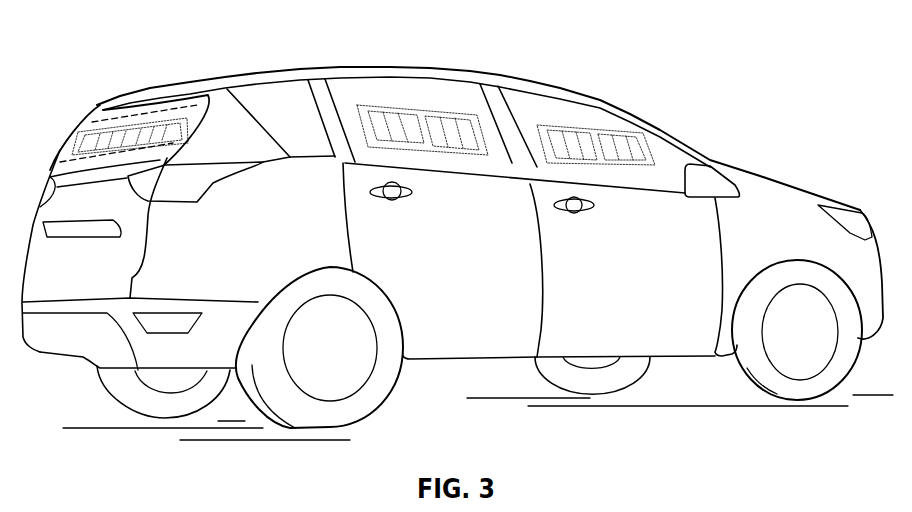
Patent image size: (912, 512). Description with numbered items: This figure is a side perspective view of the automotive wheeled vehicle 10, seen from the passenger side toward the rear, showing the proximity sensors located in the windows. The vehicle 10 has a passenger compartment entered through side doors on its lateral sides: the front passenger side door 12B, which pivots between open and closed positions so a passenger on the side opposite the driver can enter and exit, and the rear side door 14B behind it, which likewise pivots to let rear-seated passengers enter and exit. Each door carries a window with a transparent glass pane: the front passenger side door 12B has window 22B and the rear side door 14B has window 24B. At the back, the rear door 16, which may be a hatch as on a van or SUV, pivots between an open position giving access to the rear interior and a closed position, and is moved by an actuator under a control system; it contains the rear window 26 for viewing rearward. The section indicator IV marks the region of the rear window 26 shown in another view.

The automotive wheeled vehicle 10 is at (745, 98).
The front passenger side door 12B is at (648, 290).
The rear side door 14B is at (462, 290).
The rear door 16 is at (68, 282).
The window 22B is at (551, 108).
The window 24B is at (373, 97).
The rear window 26 is at (149, 112).
The section view indicator IV is at (112, 117).